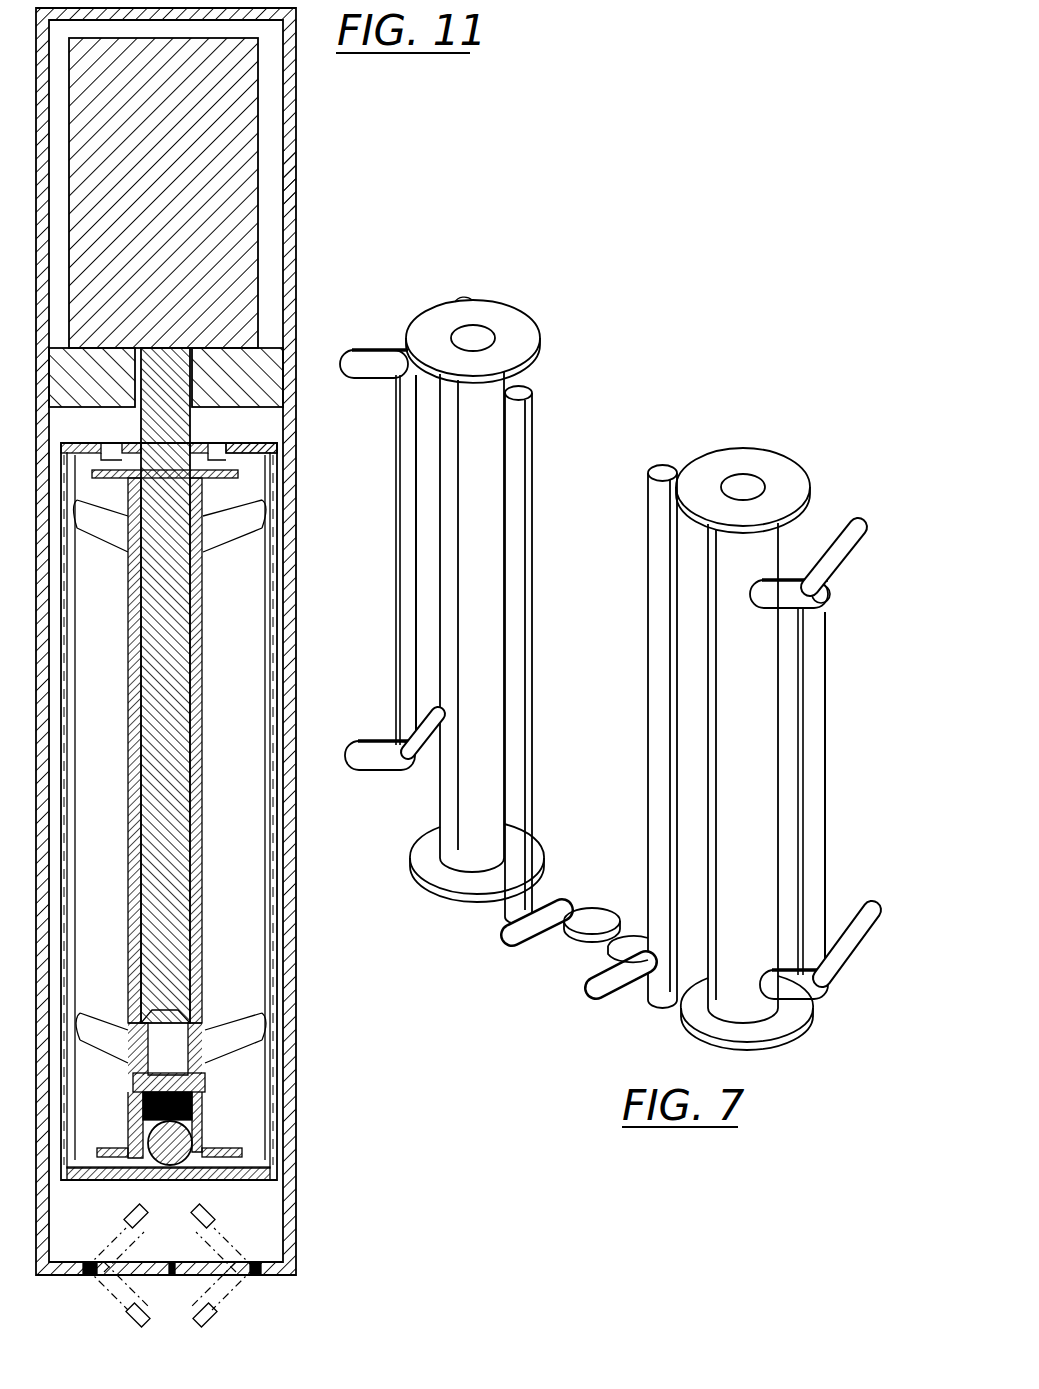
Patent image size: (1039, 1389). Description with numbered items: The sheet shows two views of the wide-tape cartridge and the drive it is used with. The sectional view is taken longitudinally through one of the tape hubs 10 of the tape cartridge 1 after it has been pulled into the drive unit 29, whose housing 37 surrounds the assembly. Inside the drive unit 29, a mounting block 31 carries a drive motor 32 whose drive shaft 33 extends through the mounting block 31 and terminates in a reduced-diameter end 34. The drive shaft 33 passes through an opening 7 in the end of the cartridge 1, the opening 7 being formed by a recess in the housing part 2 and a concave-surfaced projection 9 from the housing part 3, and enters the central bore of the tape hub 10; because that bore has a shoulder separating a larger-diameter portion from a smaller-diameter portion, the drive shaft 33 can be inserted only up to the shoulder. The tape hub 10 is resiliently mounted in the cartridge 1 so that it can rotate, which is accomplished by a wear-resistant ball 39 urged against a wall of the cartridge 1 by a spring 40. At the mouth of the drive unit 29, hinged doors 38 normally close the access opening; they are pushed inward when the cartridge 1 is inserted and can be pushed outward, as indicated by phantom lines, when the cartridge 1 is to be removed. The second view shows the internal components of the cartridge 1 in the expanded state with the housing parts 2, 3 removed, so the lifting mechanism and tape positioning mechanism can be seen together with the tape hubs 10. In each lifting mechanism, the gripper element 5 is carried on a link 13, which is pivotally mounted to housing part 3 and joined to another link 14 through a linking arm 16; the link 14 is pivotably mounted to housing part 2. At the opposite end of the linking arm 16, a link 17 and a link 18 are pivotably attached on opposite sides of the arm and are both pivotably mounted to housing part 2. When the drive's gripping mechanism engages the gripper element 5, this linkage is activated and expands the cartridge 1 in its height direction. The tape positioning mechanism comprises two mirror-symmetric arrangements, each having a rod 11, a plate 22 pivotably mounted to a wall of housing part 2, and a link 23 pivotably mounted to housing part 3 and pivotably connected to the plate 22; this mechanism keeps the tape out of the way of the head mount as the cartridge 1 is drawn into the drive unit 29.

In FIG. 11, the tape cartridge 1 is at (204, 641).
In FIG. 11, the housing part 2 is at (70, 706).
In FIG. 11, the housing part 3 is at (272, 603).
In FIG. 7, the gripper element 5 is at (825, 612).
In FIG. 11, the opening 7 is at (110, 448).
In FIG. 11, the projection 9 is at (262, 447).
In FIG. 11, the tape hub 10 is at (125, 1150).
In FIG. 7, the tape hub 10 is at (505, 316).
In FIG. 7, the rod 11 is at (522, 390).
In FIG. 11, the link 13 is at (110, 532).
In FIG. 7, the link 13 is at (356, 366).
In FIG. 11, the link 14 is at (240, 522).
In FIG. 7, the link 14 is at (398, 348).
In FIG. 7, the linking arm 16 is at (420, 442).
In FIG. 11, the link 17 is at (100, 1026).
In FIG. 7, the link 17 is at (366, 758).
In FIG. 11, the link 18 is at (240, 1022).
In FIG. 7, the link 18 is at (422, 748).
In FIG. 7, the plate 22 is at (585, 928).
In FIG. 7, the link 23 is at (510, 940).
In FIG. 11, the drive unit 29 is at (305, 71).
In FIG. 11, the mounting block 31 is at (80, 374).
In FIG. 11, the drive motor 32 is at (207, 172).
In FIG. 11, the drive shaft 33 is at (165, 652).
In FIG. 11, the reduced-diameter end 34 is at (165, 993).
In FIG. 11, the housing 37 is at (296, 179).
In FIG. 11, the hinged door 38 is at (198, 1262).
In FIG. 11, the wear-resistant ball 39 is at (185, 1140).
In FIG. 11, the spring 40 is at (196, 1090).